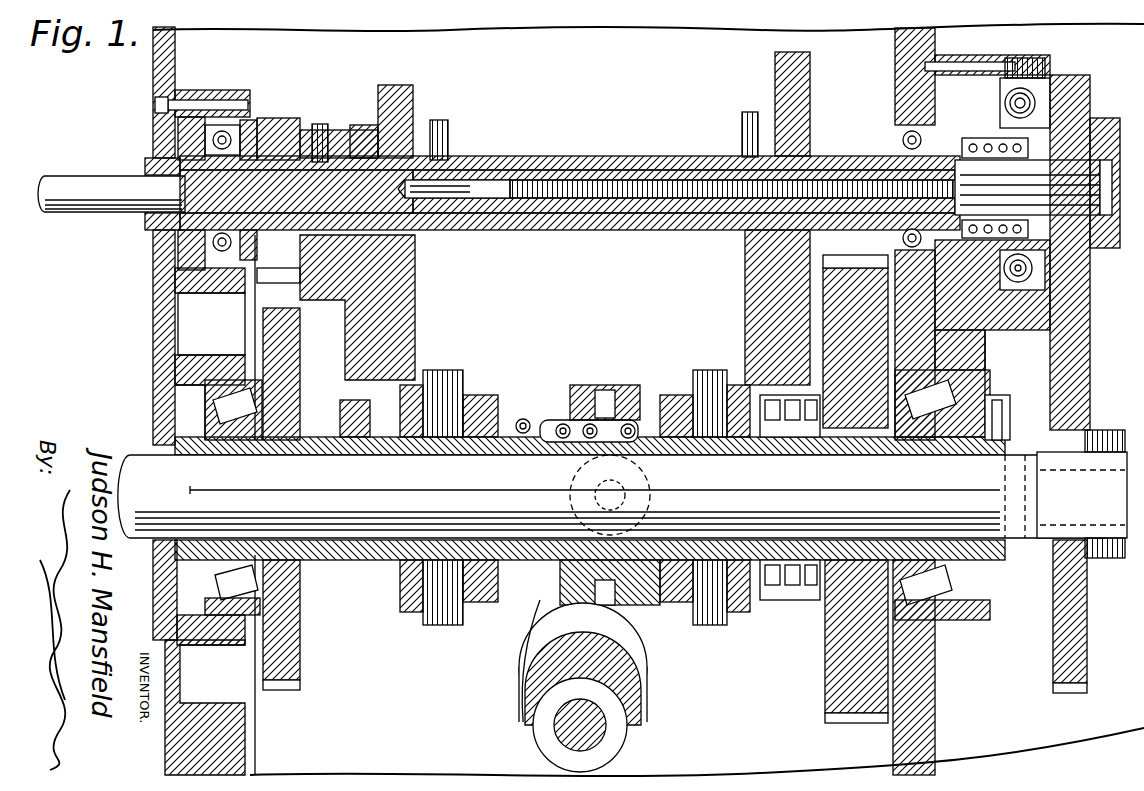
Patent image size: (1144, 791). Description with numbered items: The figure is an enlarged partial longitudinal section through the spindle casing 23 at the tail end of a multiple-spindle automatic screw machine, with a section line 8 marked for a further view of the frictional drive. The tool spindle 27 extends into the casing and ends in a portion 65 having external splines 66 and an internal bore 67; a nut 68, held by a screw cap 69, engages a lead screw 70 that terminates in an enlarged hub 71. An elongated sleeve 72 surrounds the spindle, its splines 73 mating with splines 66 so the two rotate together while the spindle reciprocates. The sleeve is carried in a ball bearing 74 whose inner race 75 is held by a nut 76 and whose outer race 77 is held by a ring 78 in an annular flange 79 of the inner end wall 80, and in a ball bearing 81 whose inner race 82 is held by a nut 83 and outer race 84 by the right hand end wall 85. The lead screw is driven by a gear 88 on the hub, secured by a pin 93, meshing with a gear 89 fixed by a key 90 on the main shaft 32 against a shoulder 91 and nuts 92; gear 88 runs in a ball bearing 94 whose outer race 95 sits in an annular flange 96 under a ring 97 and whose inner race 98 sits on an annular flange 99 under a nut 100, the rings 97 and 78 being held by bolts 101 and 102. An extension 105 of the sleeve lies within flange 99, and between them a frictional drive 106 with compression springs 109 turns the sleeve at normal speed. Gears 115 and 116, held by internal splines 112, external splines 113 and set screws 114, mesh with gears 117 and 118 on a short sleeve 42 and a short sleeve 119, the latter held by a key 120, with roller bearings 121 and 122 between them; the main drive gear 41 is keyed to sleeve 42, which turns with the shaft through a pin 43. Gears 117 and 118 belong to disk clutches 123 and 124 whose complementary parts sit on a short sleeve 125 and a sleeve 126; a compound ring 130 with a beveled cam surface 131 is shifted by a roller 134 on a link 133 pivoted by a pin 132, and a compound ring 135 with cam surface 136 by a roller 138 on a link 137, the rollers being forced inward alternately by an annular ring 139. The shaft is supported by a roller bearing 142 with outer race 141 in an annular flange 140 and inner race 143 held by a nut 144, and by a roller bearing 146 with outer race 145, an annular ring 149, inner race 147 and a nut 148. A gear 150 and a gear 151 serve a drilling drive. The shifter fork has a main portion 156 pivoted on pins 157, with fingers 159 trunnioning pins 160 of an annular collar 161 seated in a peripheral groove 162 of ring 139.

The section line 8 is at (955, 107).
The spindle casing 23 is at (1143, 78).
The tool spindle 27 is at (90, 186).
The main shaft 32 is at (762, 483).
The main drive gear 41 is at (825, 700).
The short sleeve 42 is at (913, 455).
The pin 43 is at (1012, 438).
The spindle portion 65 is at (488, 178).
The splines 66 is at (545, 172).
The bore 67 is at (475, 202).
The nut 68 is at (885, 178).
The screw cap 69 is at (935, 232).
The lead screw 70 is at (652, 188).
The enlarged hub 71 is at (1075, 181).
The sleeve 72 is at (603, 158).
The splines 73 is at (278, 168).
The ball bearing 74 is at (262, 168).
The inner race 75 is at (180, 256).
The nut 76 is at (180, 240).
The outer race 77 is at (244, 122).
The ring 78 is at (245, 292).
The annular flange 79 is at (190, 280).
The inner end wall 80 is at (165, 360).
The ball bearing 81 is at (900, 242).
The inner race 82 is at (900, 142).
The nut 83 is at (952, 238).
The outer race 84 is at (905, 128).
The right hand end wall 85 is at (935, 698).
The gear 88 is at (1070, 286).
The gear 89 is at (1072, 360).
The key 90 is at (1070, 456).
The shoulder 91 is at (1037, 478).
The nuts 92 is at (1118, 430).
The pin 93 is at (1112, 192).
The ball bearing 94 is at (1012, 75).
The outer race 95 is at (1025, 95).
The annular flange 96 is at (985, 58).
The ring 97 is at (1050, 66).
The inner race 98 is at (1045, 262).
The annular flange 99 is at (1040, 136).
The nut 100 is at (995, 118).
The bolts 101 is at (955, 62).
The bolts 102 is at (190, 102).
The extension 105 is at (1005, 218).
The frictional drive 106 is at (962, 138).
The compression springs 109 is at (990, 175).
The internal splines 112 is at (365, 145).
The external splines 113 is at (630, 152).
The set screws 114 is at (445, 128).
The gear 115 is at (776, 72).
The gear 116 is at (400, 110).
The gear 117 is at (812, 150).
The gear 118 is at (414, 330).
The short sleeve 119 is at (400, 455).
The key 120 is at (315, 490).
The roller bearing 121 is at (790, 440).
The roller bearing 122 is at (345, 408).
The disk clutch 123 is at (676, 362).
The disk clutch 124 is at (488, 372).
The short sleeve 125 is at (702, 455).
The sleeve 126 is at (440, 455).
The compound ring 130 is at (662, 605).
The beveled cam surface 131 is at (642, 392).
The pin 132 is at (558, 428).
The link 133 is at (600, 445).
The roller 134 is at (642, 445).
The compound ring 135 is at (508, 410).
The beveled cam surface 136 is at (532, 560).
The link 137 is at (548, 438).
The roller 138 is at (526, 416).
The annular ring 139 is at (578, 398).
The annular flange 140 is at (200, 635).
The outer race 141 is at (248, 618).
The roller bearing 142 is at (222, 592).
The inner race 143 is at (235, 440).
The nut 144 is at (185, 437).
The outer race 145 is at (950, 612).
The roller bearing 146 is at (960, 588).
The inner race 147 is at (947, 455).
The nut 148 is at (985, 418).
The annular ring 149 is at (982, 606).
The gear 150 is at (300, 285).
The gear 151 is at (290, 326).
The main portion 156 is at (620, 681).
The pins 157 is at (600, 732).
The fingers 159 is at (555, 605).
The pins 160 is at (598, 494).
The annular collar 161 is at (602, 388).
The peripheral groove 162 is at (632, 388).